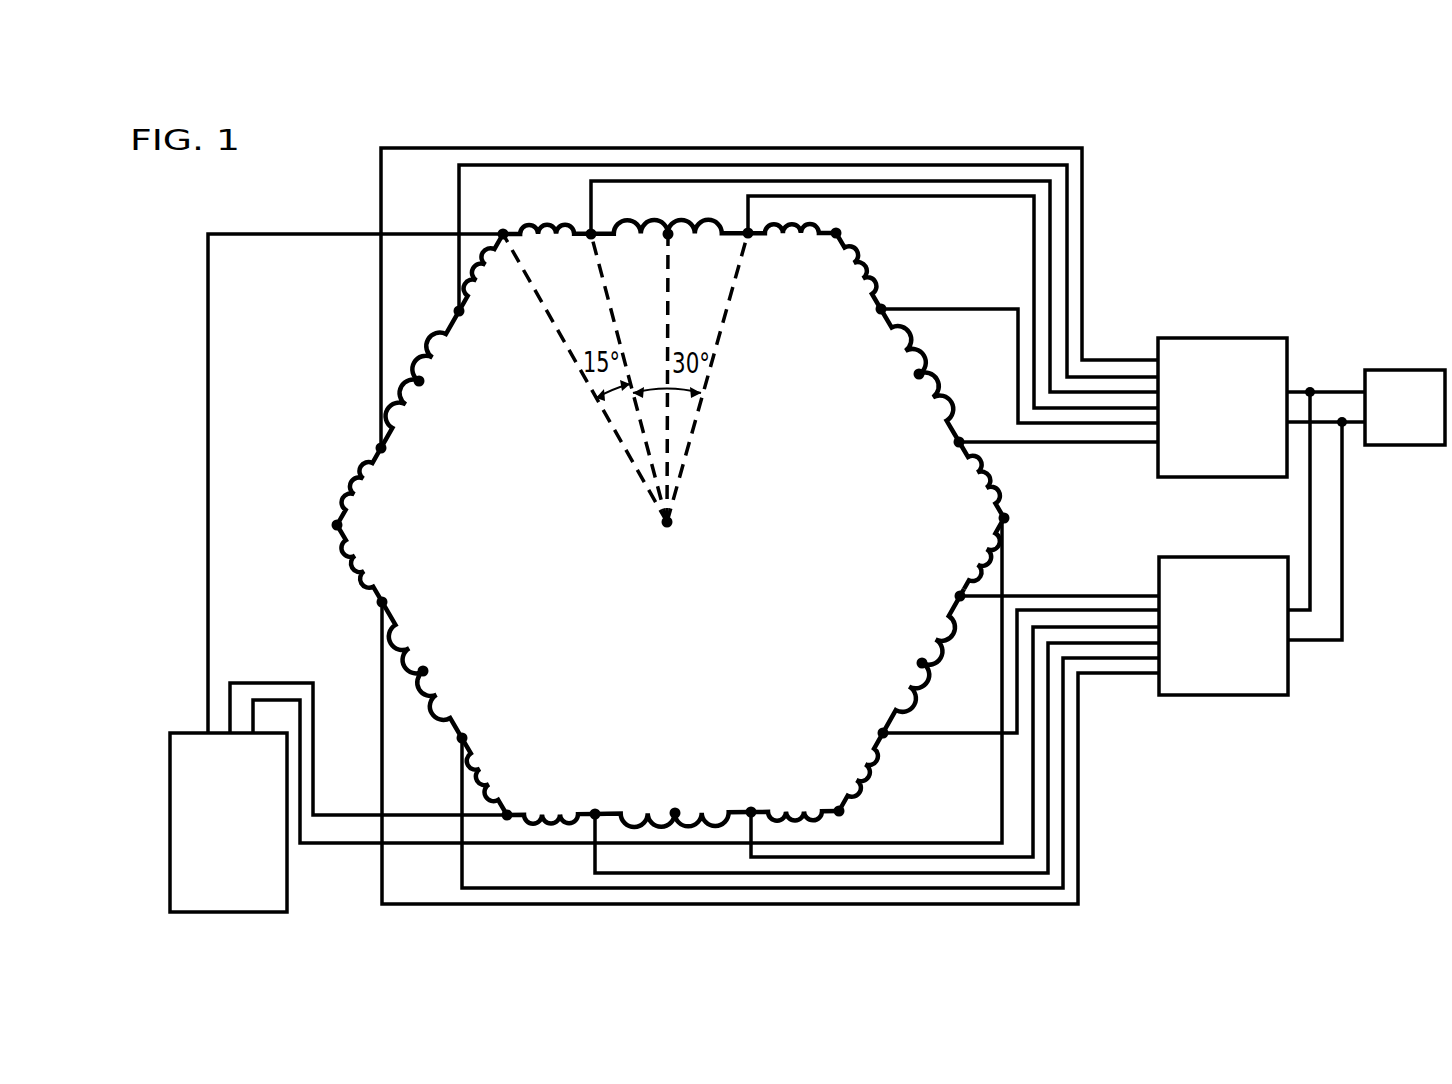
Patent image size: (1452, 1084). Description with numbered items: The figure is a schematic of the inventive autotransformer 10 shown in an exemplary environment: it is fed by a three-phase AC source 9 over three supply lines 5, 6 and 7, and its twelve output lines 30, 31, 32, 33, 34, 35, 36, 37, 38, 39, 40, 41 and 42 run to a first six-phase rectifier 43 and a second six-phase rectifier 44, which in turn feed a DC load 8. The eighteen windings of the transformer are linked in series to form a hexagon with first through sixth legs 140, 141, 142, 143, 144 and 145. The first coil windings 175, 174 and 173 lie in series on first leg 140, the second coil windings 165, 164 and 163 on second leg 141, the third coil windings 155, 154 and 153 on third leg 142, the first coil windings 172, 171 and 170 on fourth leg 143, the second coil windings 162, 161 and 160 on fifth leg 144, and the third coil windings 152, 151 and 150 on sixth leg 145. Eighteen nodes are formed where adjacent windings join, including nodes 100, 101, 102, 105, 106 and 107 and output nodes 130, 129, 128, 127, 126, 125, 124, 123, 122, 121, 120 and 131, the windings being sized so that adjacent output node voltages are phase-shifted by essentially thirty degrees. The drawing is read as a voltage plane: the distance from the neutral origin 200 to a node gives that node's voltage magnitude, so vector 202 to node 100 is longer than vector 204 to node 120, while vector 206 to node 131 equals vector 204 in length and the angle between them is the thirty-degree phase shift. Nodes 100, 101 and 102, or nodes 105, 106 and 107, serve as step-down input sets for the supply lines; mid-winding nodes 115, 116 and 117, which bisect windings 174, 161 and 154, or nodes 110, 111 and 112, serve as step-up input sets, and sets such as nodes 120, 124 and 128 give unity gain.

The supply line 5 is at (210, 492).
The supply line 6 is at (368, 813).
The supply line 7 is at (337, 845).
The DC load 8 is at (1405, 370).
The 3-phase AC source 9 is at (287, 885).
The autotransformer 10 is at (490, 128).
The output line 30 is at (1018, 368).
The output line 31 is at (1120, 442).
The winding tap lead 32 is at (1005, 585).
The output line 33 is at (1112, 594).
The output line 34 is at (933, 733).
The output line 35 is at (1032, 813).
The output line 36 is at (947, 872).
The output line 37 is at (1007, 905).
The output line 38 is at (983, 905).
The output line 39 is at (950, 145).
The output line 40 is at (1020, 160).
The output line 41 is at (1048, 228).
The output line 42 is at (1034, 262).
The first 6-phase rectifier 43 is at (1228, 338).
The second 6-phase rectifier 44 is at (1228, 695).
The node 100 is at (503, 232).
The node 101 is at (500, 814).
The node 102 is at (1000, 518).
The node 105 is at (838, 230).
The node 106 is at (333, 527).
The node 107 is at (842, 812).
The node 110 is at (668, 236).
The node 111 is at (425, 670).
The node 112 is at (917, 663).
The node 115 is at (916, 375).
The node 116 is at (427, 383).
The node 117 is at (675, 810).
The output node 120 is at (591, 236).
The output node 121 is at (463, 315).
The output node 122 is at (387, 447).
The output node 123 is at (382, 605).
The output node 124 is at (465, 733).
The output node 125 is at (577, 802).
The output node 126 is at (742, 810).
The output node 127 is at (880, 733).
The output node 128 is at (962, 604).
The output node 129 is at (953, 445).
The output node 130 is at (880, 310).
The output node 131 is at (747, 235).
The first leg 140 is at (852, 244).
The second leg 141 is at (956, 596).
The third leg 142 is at (597, 810).
The fourth leg 143 is at (427, 598).
The fifth leg 144 is at (393, 430).
The sixth leg 145 is at (718, 232).
The sixth winding of third coil 150 is at (797, 225).
The fifth winding of third coil 151 is at (624, 236).
The fourth winding of third coil 152 is at (540, 233).
The third winding of third coil 153 is at (530, 823).
The second winding of third coil 154 is at (637, 825).
The first winding of third coil 155 is at (773, 810).
The sixth winding of second coil 160 is at (478, 278).
The fifth winding of second coil 161 is at (422, 355).
The fourth winding of second coil 162 is at (345, 492).
The third winding of second coil 163 is at (863, 787).
The second winding of second coil 164 is at (917, 707).
The first winding of second coil 165 is at (995, 567).
The sixth winding of first coil 170 is at (360, 573).
The fifth winding of first coil 171 is at (430, 708).
The fourth winding of first coil 172 is at (493, 783).
The third winding of first coil 173 is at (1000, 497).
The second winding of first coil 174 is at (936, 377).
The first winding of first coil 175 is at (877, 282).
The origin 200 is at (665, 530).
The vector 202 is at (1228, 557).
The vector 204 is at (637, 418).
The vector 206 is at (695, 418).